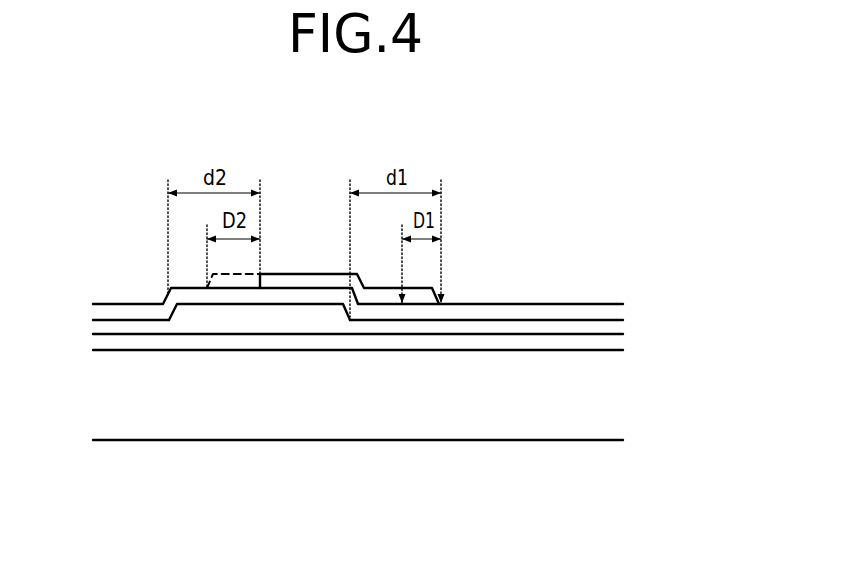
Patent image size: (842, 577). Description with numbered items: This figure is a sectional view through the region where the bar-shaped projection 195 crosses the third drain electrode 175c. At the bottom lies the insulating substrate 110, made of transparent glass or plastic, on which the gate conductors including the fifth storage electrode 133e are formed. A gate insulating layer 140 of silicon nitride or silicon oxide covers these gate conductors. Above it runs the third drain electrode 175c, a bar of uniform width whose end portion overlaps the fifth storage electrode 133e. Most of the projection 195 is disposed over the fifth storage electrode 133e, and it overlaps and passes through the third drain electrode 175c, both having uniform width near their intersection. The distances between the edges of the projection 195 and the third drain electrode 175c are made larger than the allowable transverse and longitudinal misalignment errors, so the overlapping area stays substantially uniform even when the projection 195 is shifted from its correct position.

The insulating substrate 110 is at (490, 423).
The fifth storage electrode 133e is at (392, 340).
The gate insulating layer 140 is at (260, 327).
The third drain electrode 175c is at (208, 311).
The projection 195 is at (303, 286).